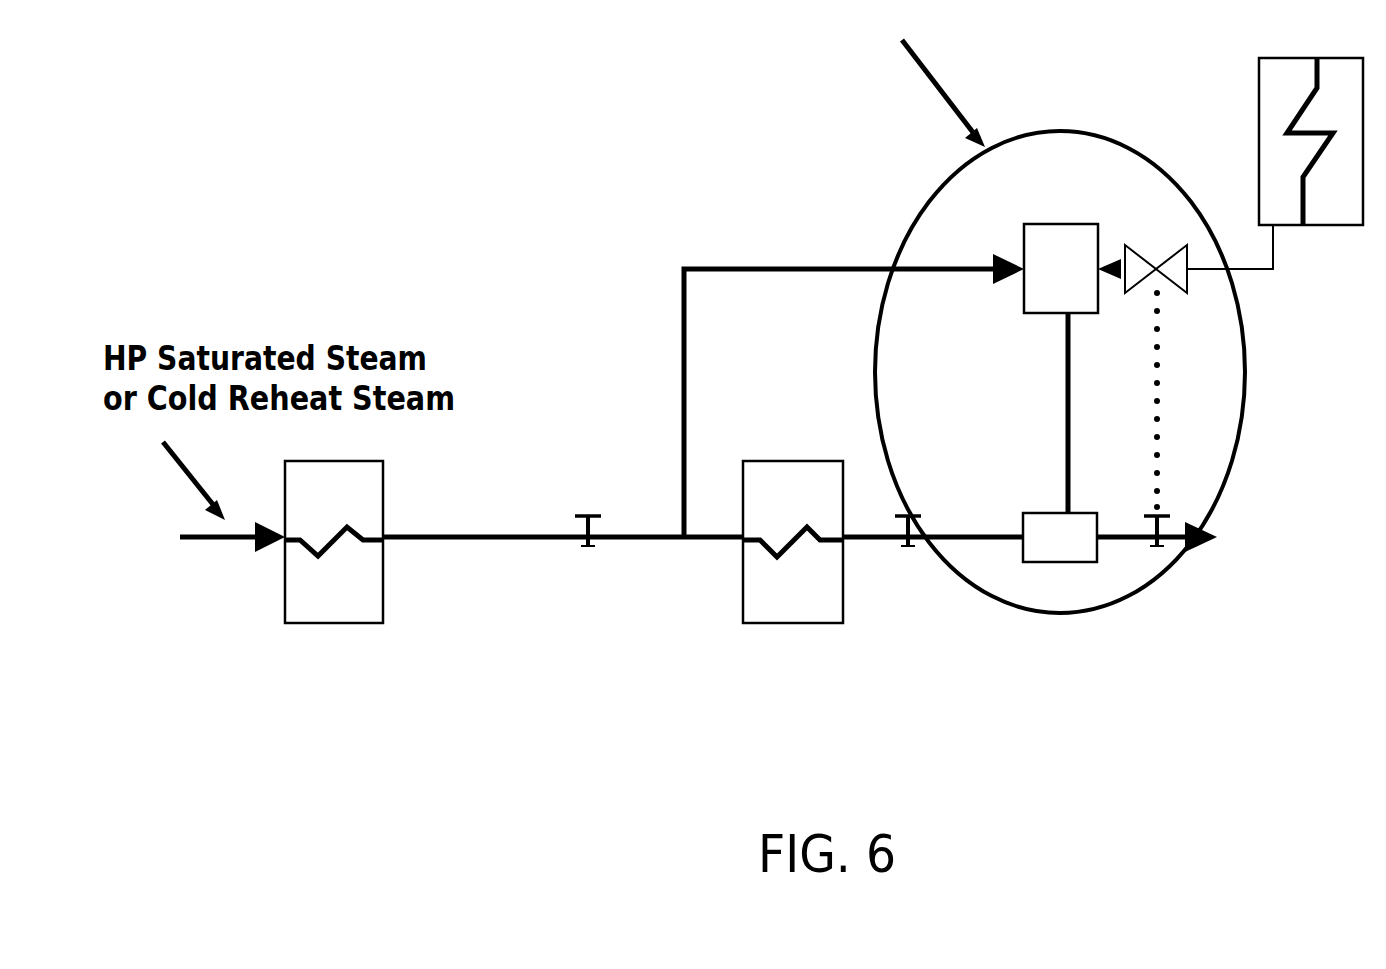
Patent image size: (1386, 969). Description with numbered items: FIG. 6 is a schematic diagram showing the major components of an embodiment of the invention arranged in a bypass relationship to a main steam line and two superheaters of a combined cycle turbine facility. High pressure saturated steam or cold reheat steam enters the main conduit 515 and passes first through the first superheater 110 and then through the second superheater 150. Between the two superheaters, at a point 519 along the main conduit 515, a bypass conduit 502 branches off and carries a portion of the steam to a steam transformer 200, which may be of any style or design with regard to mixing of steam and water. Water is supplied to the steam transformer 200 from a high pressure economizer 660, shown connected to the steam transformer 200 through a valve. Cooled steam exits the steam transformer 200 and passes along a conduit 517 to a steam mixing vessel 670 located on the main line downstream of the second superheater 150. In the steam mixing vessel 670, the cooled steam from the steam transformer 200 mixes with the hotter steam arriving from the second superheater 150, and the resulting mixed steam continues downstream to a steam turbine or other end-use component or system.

The first superheater 110 is at (334, 542).
The second superheater 150 is at (793, 542).
The steam transformer 200 is at (1061, 251).
The bypass conduit 502 is at (826, 396).
The main conduit 515 is at (491, 554).
The conduit 517 is at (1037, 413).
The point 519 is at (671, 559).
The high pressure economizer 660 is at (1311, 141).
The steam mixing vessel 670 is at (1060, 537).